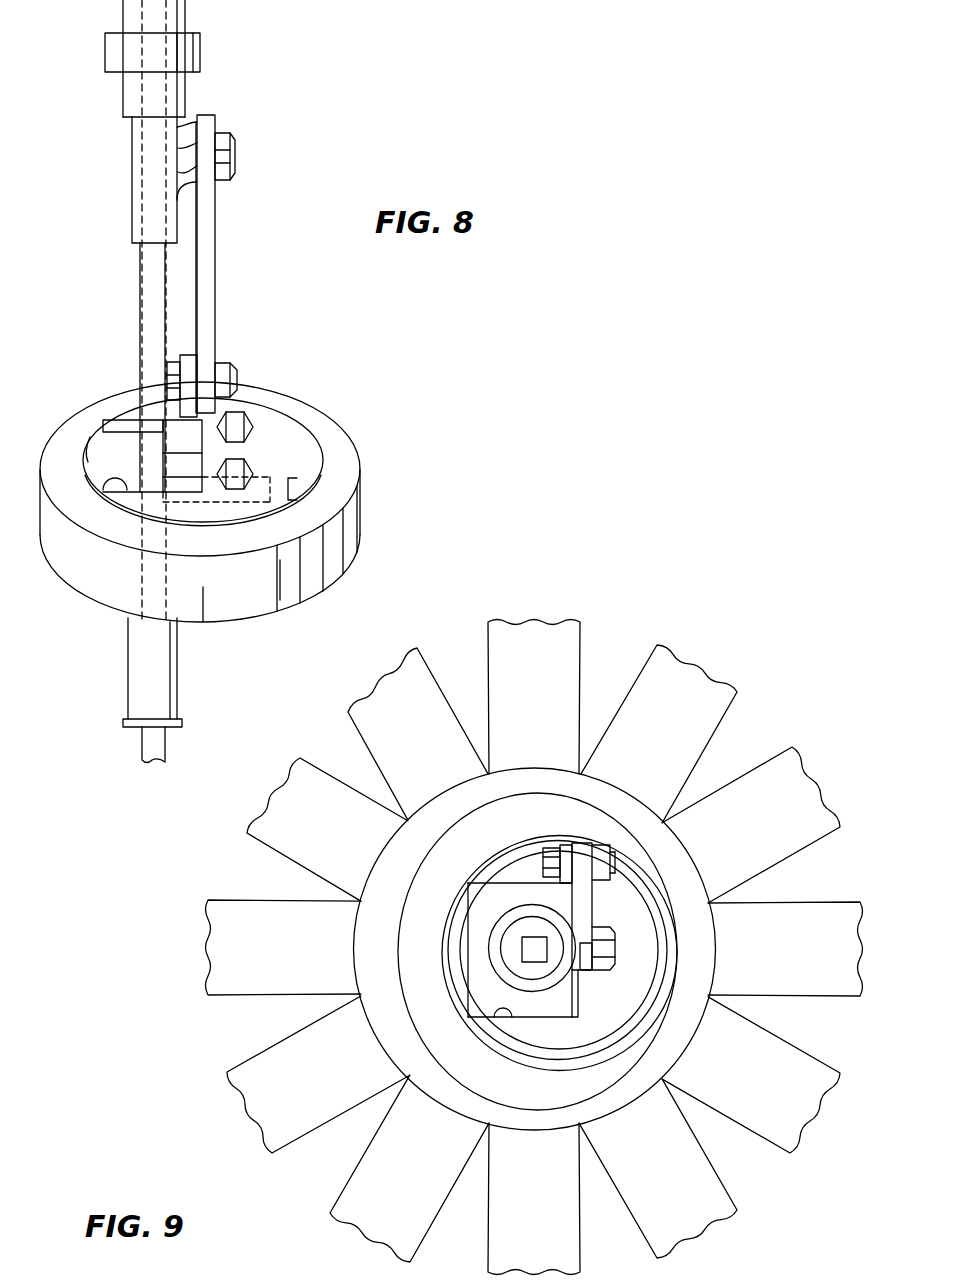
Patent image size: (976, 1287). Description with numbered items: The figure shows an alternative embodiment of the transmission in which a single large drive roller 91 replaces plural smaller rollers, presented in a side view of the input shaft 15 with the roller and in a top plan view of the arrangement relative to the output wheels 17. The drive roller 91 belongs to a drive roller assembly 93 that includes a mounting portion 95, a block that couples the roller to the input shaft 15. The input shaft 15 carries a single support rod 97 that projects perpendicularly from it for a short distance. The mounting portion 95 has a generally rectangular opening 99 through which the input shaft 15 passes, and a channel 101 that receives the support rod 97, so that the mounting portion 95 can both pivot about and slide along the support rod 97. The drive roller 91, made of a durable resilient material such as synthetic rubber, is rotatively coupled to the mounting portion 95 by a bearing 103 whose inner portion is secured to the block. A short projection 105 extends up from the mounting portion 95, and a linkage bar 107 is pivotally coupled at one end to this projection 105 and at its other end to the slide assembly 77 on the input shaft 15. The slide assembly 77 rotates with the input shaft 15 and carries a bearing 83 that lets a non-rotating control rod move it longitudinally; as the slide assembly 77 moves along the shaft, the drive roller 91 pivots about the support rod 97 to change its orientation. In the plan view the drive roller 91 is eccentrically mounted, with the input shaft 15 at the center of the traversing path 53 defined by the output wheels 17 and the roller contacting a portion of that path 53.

In FIG. 8, the input shaft 15 is at (140, 262).
In FIG. 9, the input shaft 15 is at (534, 949).
In FIG. 9, the output wheels 17 is at (636, 665).
In FIG. 9, the traversing path 53 is at (356, 926).
In FIG. 8, the slide assembly 77 is at (132, 160).
In FIG. 8, the bearing 83 is at (200, 50).
In FIG. 8, the drive roller 91 is at (360, 532).
In FIG. 9, the drive roller 91 is at (615, 817).
In FIG. 8, the drive roller assembly 93 is at (226, 494).
In FIG. 8, the mounting portion 95 is at (272, 415).
In FIG. 9, the mounting portion 95 is at (659, 942).
In FIG. 8, the support rod 97 is at (192, 487).
In FIG. 8, the rectangular opening 99 is at (102, 488).
In FIG. 9, the rectangular opening 99 is at (500, 1010).
In FIG. 8, the channel 101 is at (293, 497).
In FIG. 8, the bearing 103 is at (93, 458).
In FIG. 8, the projection 105 is at (172, 385).
In FIG. 9, the projection 105 is at (560, 845).
In FIG. 8, the linkage bar 107 is at (210, 218).
In FIG. 9, the linkage bar 107 is at (586, 908).